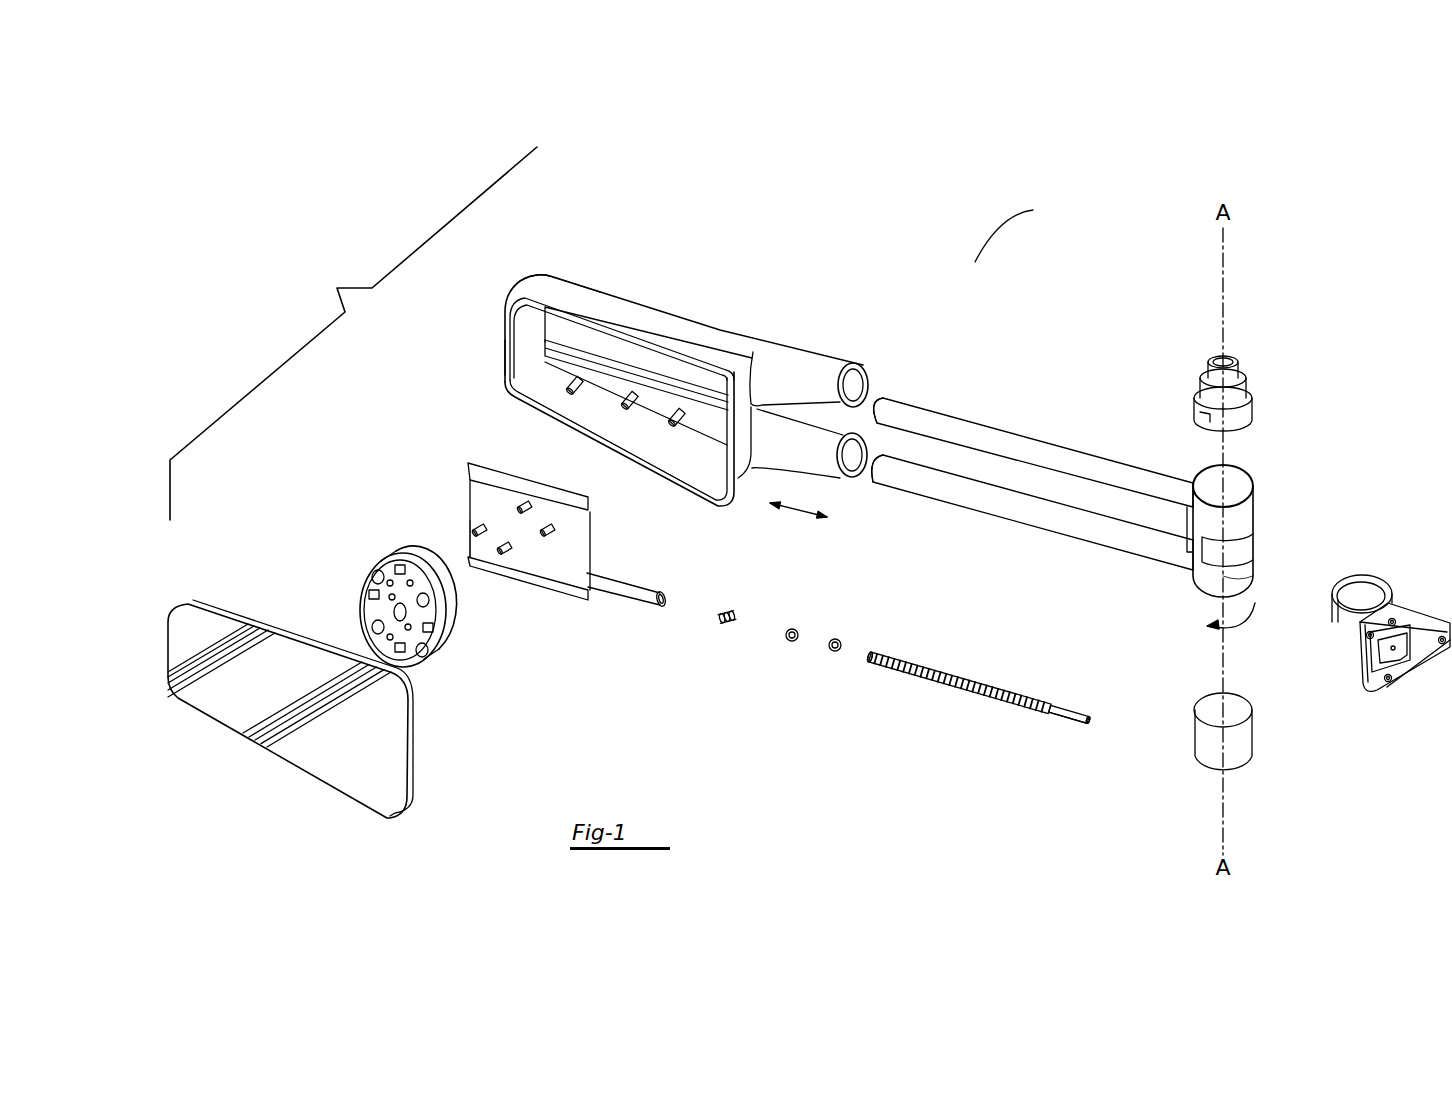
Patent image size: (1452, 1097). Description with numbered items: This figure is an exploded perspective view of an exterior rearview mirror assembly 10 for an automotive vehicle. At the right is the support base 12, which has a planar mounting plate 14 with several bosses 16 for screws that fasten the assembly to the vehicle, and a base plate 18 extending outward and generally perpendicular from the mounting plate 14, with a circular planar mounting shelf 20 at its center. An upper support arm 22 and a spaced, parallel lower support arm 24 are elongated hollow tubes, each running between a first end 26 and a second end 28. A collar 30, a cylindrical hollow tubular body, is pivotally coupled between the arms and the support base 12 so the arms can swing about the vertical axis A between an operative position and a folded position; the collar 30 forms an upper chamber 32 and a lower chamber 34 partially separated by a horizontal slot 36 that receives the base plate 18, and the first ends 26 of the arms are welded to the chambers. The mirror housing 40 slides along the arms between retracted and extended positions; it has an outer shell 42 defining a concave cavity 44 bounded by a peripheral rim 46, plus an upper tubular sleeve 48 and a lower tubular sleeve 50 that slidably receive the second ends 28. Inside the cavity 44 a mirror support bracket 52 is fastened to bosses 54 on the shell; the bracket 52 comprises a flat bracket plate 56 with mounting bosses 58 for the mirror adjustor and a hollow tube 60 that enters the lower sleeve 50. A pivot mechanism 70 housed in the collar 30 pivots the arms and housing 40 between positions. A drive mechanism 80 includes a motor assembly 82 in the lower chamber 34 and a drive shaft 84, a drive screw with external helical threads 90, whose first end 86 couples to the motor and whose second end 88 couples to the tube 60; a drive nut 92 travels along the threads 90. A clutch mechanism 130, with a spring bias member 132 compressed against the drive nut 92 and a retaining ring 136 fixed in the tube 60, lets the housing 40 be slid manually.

The exterior rearview mirror assembly 10 is at (1016, 230).
The support base 12 is at (1409, 596).
The mounting plate 14 is at (1360, 668).
The bosses 16 is at (1445, 648).
The base plate 18 is at (1355, 575).
The mounting shelf 20 is at (1353, 599).
The upper support arm 22 is at (1000, 425).
The lower support arm 24 is at (950, 503).
The first end 26 is at (1193, 483).
The second end 28 is at (880, 397).
The collar 30 is at (1262, 470).
The upper chamber 32 is at (1257, 490).
The lower chamber 34 is at (1252, 576).
The slot 36 is at (1237, 548).
The mirror housing 40 is at (592, 278).
The outer shell 42 is at (530, 283).
The cavity 44 is at (717, 470).
The peripheral rim 46 is at (505, 370).
The upper tubular sleeve 48 is at (865, 363).
The lower tubular sleeve 50 is at (852, 477).
The mirror support bracket 52 is at (468, 468).
The bosses 54 is at (570, 393).
The bracket plate 56 is at (577, 567).
The mounting bosses 58 is at (475, 530).
The tube 60 is at (627, 597).
The pivot mechanism 70 is at (1247, 365).
The drive mechanism 80 is at (1145, 762).
The motor assembly 82 is at (1252, 733).
The drive shaft 84 is at (1067, 720).
The first end 86 is at (1090, 722).
The second end 88 is at (860, 660).
The external helical threads 90 is at (957, 677).
The drive nut 92 is at (790, 642).
The clutch mechanism 130 is at (780, 603).
The spring bias member 132 is at (725, 625).
The retaining ring 136 is at (835, 652).